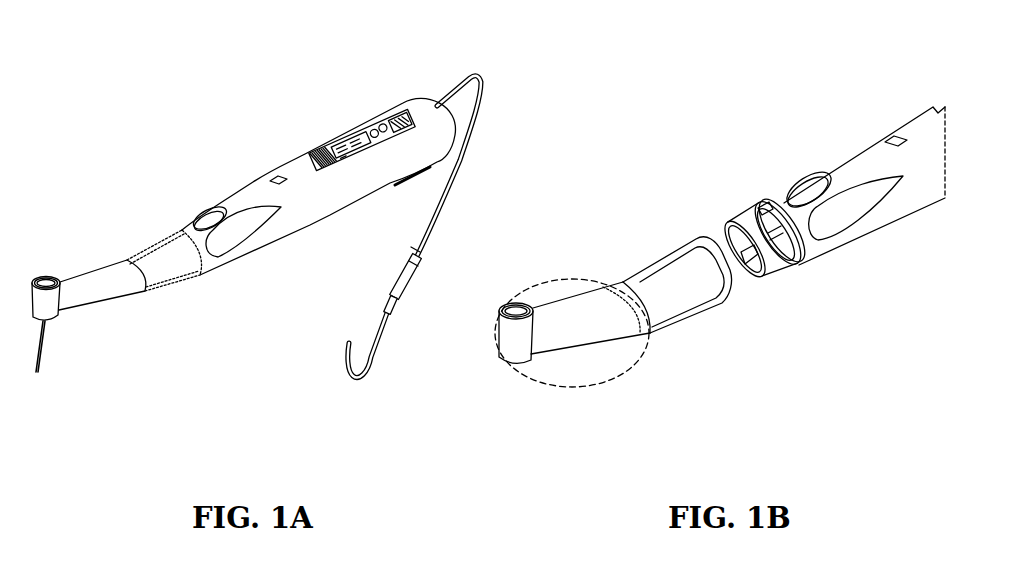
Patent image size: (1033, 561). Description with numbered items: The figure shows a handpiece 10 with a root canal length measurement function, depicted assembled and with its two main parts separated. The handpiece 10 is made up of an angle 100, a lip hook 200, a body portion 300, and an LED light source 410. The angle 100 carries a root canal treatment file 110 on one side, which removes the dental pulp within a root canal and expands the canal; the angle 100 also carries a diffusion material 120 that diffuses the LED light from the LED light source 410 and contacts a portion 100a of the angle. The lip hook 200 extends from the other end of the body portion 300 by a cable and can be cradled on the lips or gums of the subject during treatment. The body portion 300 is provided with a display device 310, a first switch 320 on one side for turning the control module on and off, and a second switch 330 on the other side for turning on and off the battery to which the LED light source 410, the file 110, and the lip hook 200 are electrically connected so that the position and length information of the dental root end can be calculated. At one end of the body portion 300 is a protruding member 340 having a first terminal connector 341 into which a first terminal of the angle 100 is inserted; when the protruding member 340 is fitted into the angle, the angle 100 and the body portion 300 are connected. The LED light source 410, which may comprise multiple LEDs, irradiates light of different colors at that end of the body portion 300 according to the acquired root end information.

In FIG. 1A, the handpiece 10 is at (212, 54).
In FIG. 1B, the handpiece 10 is at (730, 84).
In FIG. 1A, the angle 100 is at (103, 262).
In FIG. 1B, the angle 100 is at (605, 278).
In FIG. 1B, the portion of the angle 100a is at (562, 389).
In FIG. 1A, the root canal treatment file 110 is at (60, 346).
In FIG. 1B, the diffusion material 120 is at (675, 253).
In FIG. 1A, the lip hook 200 is at (437, 219).
In FIG. 1A, the body portion 300 is at (251, 176).
In FIG. 1B, the body portion 300 is at (900, 117).
In FIG. 1A, the display device 310 is at (317, 152).
In FIG. 1A, the first switch 320 is at (373, 127).
In FIG. 1A, the second switch 330 is at (206, 212).
In FIG. 1B, the second switch 330 is at (807, 185).
In FIG. 1B, the protruding member 340 is at (771, 266).
In FIG. 1B, the first terminal connector 341 is at (745, 268).
In FIG. 1B, the LED light source 410 is at (770, 197).